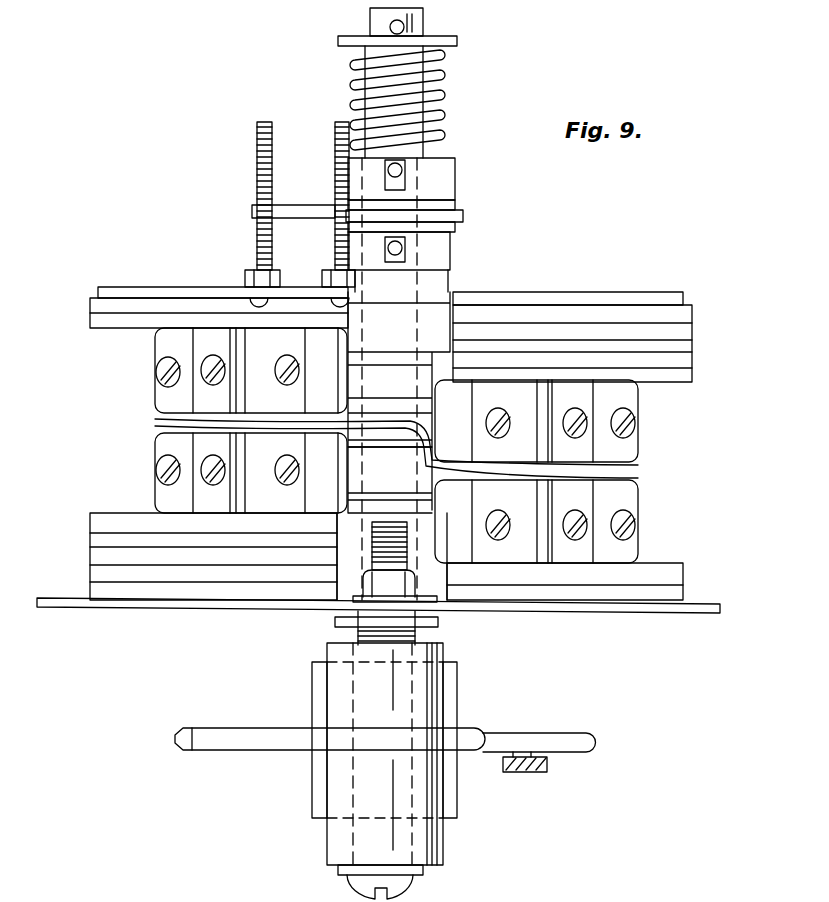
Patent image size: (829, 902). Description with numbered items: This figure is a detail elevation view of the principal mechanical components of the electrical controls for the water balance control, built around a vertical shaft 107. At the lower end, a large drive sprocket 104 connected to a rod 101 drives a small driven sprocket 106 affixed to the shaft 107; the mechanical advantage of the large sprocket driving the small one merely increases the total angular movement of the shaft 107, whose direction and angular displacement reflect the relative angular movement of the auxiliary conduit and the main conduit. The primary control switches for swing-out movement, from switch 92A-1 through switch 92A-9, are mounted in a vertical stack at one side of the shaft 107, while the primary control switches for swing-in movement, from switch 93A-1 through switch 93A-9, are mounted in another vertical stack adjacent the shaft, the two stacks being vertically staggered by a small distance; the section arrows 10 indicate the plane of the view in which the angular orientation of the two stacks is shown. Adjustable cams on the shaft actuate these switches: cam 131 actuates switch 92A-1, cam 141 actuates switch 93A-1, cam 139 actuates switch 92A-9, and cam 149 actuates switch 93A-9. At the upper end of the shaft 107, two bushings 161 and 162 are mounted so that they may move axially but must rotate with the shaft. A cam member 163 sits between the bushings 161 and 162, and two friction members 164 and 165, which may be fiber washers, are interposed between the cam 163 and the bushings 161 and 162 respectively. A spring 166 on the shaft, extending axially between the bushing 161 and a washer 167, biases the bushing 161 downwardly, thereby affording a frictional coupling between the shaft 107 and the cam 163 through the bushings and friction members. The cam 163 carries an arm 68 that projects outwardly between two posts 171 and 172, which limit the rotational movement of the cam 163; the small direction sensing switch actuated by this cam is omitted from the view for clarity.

The section line of FIG. 10 is at (150, 420).
The cross bar 68 is at (290, 213).
The primary control switch 92A-1 is at (160, 341).
The primary control switch 92A-9 is at (160, 487).
The primary control switch 93A-1 is at (638, 408).
The primary control switch 93A-9 is at (638, 540).
The rod 101 is at (523, 773).
The drive sprocket 104 is at (549, 737).
The driven sprocket 106 is at (488, 735).
The shaft 107 is at (372, 22).
The adjustable cam 131 is at (396, 352).
The adjustable cam 139 is at (374, 455).
The cam 141 is at (398, 398).
The adjustable cam 149 is at (405, 513).
The bushing 161 is at (450, 170).
The bushing 162 is at (444, 255).
The cam member 163 is at (464, 217).
The friction member 164 is at (460, 205).
The friction member 165 is at (456, 228).
The spring 166 is at (441, 95).
The washer 167 is at (452, 42).
The post 171 is at (262, 121).
The post 172 is at (342, 121).